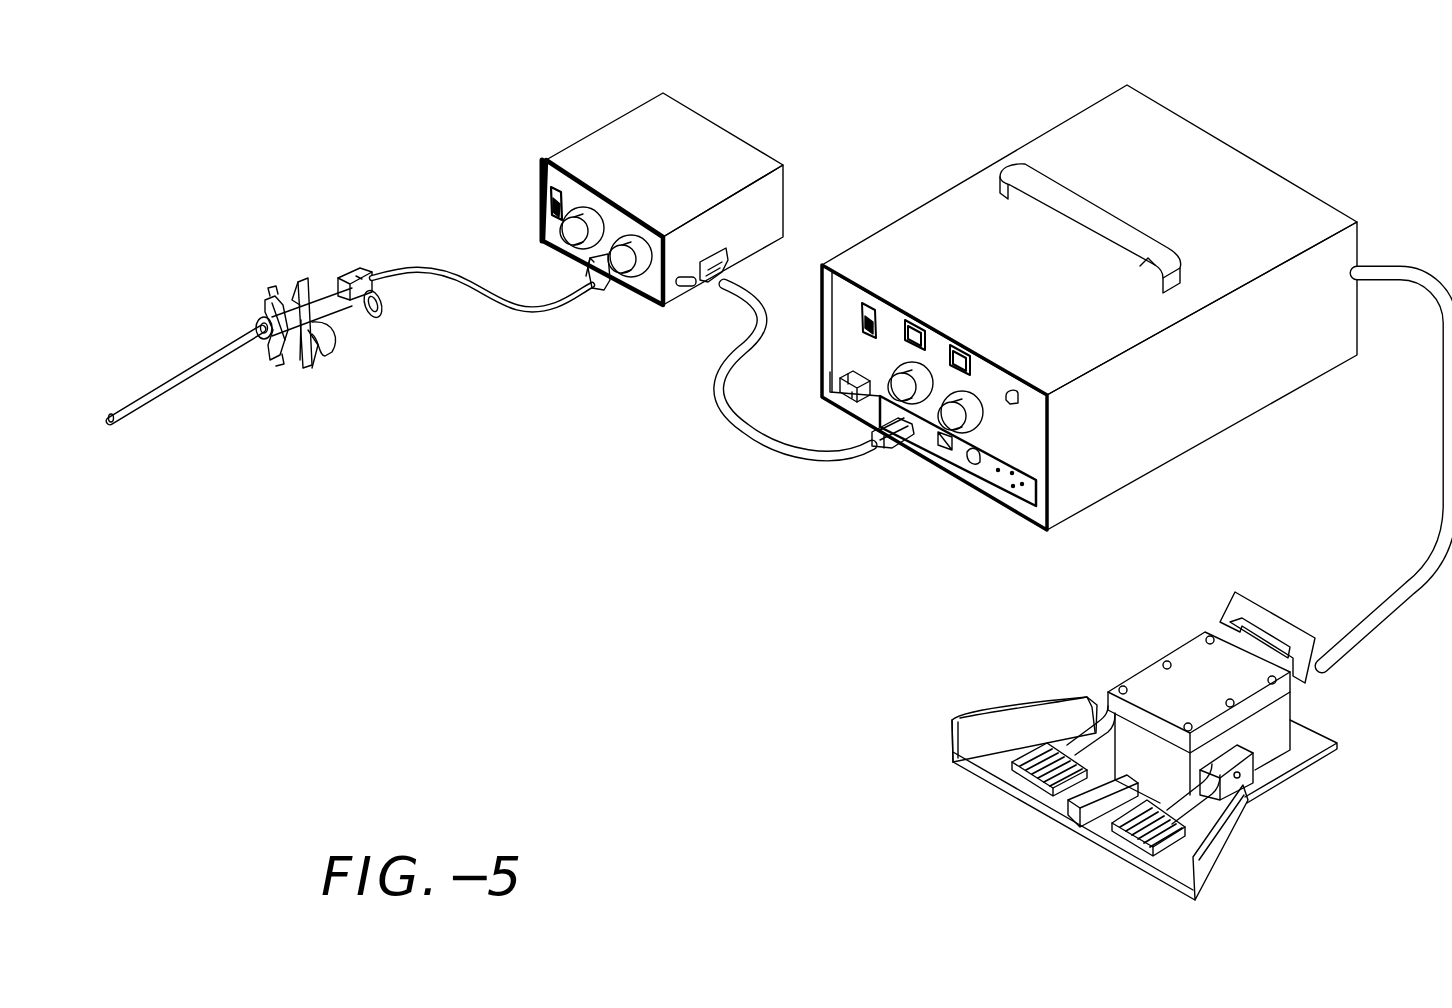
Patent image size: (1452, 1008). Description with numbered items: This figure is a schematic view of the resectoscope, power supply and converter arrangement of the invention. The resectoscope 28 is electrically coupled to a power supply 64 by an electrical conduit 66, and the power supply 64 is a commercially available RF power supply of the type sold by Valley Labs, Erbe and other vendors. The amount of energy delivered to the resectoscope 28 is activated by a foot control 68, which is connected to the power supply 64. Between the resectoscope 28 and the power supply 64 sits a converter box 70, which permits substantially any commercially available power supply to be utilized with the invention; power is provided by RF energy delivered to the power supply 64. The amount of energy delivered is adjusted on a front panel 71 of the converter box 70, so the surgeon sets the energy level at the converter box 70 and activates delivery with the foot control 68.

The resectoscope 28 is at (323, 388).
The power supply 64 is at (946, 482).
The electrical conduit 66 is at (540, 318).
The foot control 68 is at (988, 792).
The converter box 70 is at (603, 120).
The front panel 71 is at (540, 184).